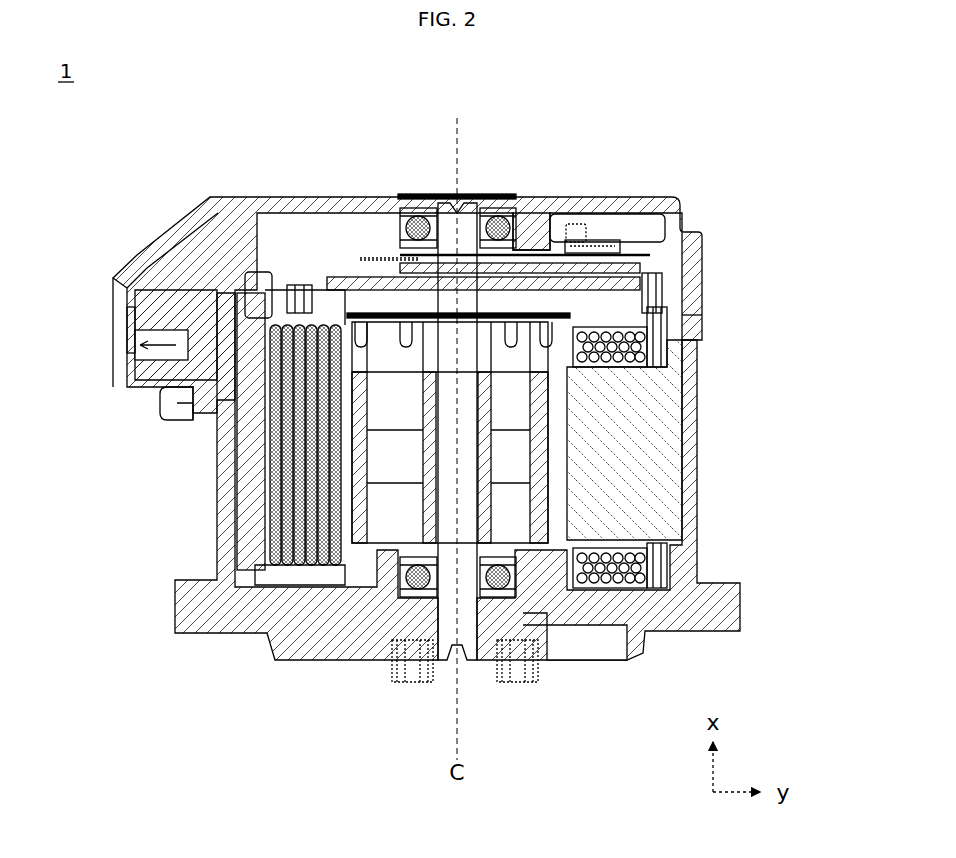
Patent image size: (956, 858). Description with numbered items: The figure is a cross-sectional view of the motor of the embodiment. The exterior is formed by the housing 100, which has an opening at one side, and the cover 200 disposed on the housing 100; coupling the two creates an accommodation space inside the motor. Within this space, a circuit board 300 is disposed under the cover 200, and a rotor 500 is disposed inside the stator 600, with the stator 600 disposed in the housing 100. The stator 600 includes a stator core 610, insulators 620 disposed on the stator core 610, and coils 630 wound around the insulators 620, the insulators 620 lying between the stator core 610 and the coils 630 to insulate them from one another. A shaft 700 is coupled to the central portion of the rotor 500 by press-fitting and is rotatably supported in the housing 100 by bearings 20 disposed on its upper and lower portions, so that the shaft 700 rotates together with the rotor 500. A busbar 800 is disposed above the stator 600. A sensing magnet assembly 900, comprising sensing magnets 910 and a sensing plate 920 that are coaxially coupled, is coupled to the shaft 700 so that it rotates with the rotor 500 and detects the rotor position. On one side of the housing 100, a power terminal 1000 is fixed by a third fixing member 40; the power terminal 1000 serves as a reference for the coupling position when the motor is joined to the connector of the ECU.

The bearings 20 is at (418, 202).
The third fixing member 40 is at (168, 400).
The housing 100 is at (665, 613).
The cover 200 is at (645, 232).
The circuit board 300 is at (529, 246).
The rotor 500 is at (293, 572).
The stator 600 is at (700, 447).
The stator core 610 is at (655, 452).
The insulators 620 is at (645, 362).
The coils 630 is at (788, 472).
The shaft 700 is at (455, 628).
The busbar 800 is at (658, 296).
The sensing magnet assembly 900 is at (581, 243).
The sensing magnets 910 is at (612, 240).
The sensing plate 920 is at (600, 282).
The power terminal 1000 is at (238, 232).